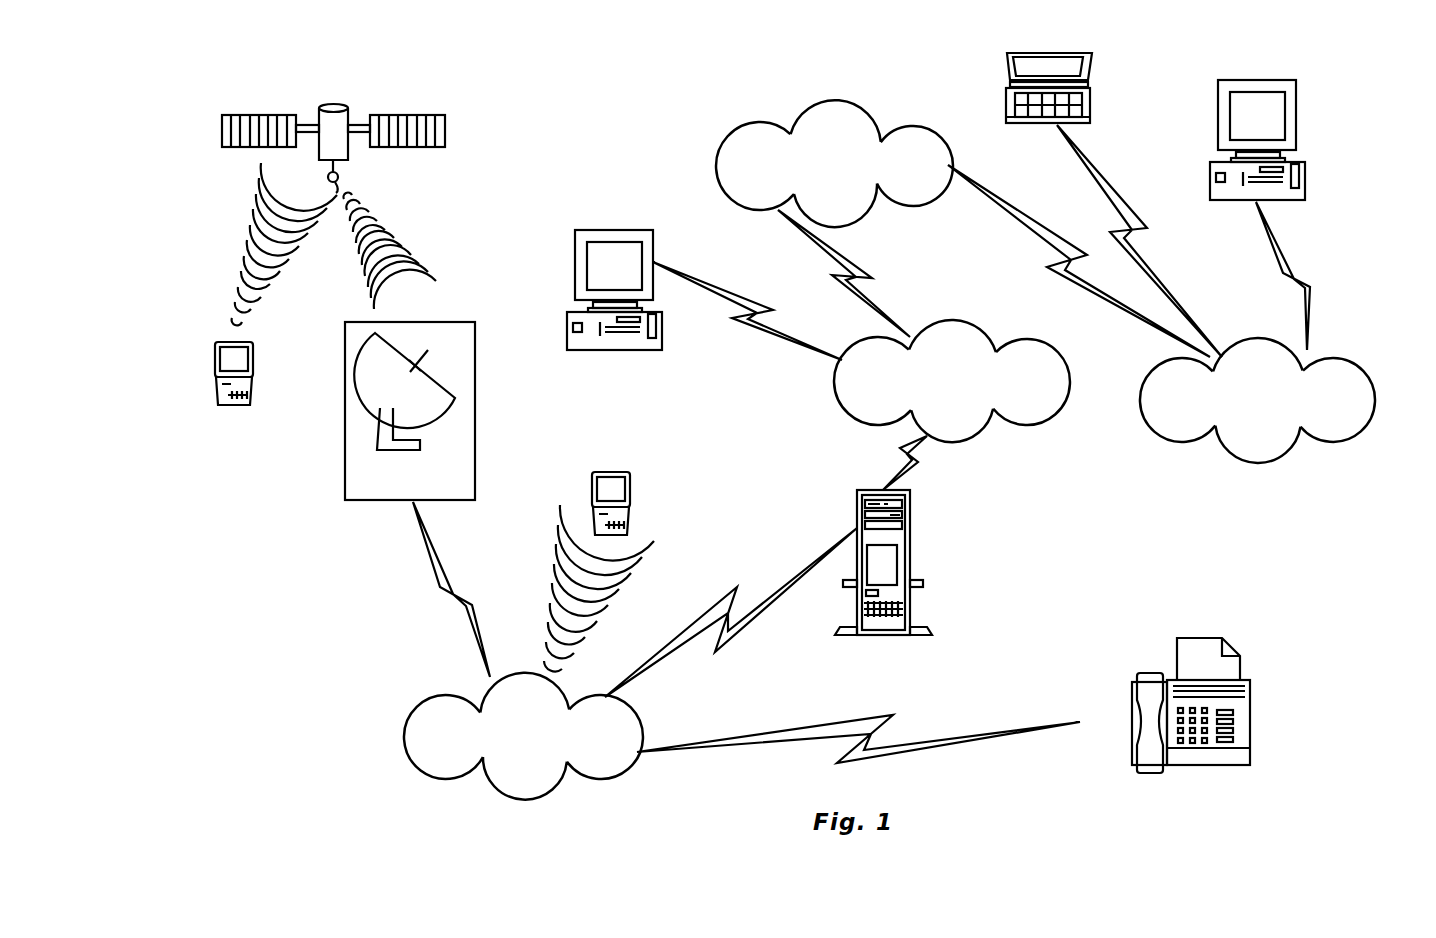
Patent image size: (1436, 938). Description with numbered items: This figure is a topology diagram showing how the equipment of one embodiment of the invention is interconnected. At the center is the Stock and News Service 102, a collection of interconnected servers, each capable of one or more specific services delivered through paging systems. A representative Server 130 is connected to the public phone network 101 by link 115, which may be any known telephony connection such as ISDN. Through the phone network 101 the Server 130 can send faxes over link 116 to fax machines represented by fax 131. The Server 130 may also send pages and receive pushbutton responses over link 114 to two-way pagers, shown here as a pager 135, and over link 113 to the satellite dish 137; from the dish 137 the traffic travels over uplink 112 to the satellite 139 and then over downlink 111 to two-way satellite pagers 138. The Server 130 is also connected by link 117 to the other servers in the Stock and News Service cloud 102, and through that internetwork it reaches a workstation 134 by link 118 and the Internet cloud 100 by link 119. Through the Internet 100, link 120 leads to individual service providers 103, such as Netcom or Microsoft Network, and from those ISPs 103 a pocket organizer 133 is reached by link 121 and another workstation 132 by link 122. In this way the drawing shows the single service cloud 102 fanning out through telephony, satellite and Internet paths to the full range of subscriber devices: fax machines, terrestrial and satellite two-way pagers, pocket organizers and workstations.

The Internet cloud 100 is at (837, 100).
The public phone network 101 is at (565, 773).
The Stock and News Service 102 is at (1027, 427).
The individual service providers 103 is at (1190, 443).
The downlink 111 is at (230, 239).
The uplink 112 is at (442, 245).
The link to satellite dish 113 is at (472, 597).
The link to two-way pagers 114 is at (632, 596).
The link between server and phone network 115 is at (748, 632).
The link to fax machines 116 is at (910, 745).
The link between server and service cloud 117 is at (917, 465).
The link to workstation 118 is at (720, 287).
The link to Internet 119 is at (868, 293).
The link to individual service providers 120 is at (1035, 226).
The link to pocket organizer 121 is at (1175, 293).
The link to other workstation 122 is at (1320, 280).
The Server 130 is at (910, 550).
The fax 131 is at (1250, 713).
The workstation 132 is at (1308, 180).
The pocket organizer 133 is at (1088, 98).
The workstation 134 is at (627, 228).
The pager 135 is at (587, 492).
The satellite dish 137 is at (430, 322).
The two-way satellite pagers 138 is at (232, 340).
The satellite 139 is at (352, 113).